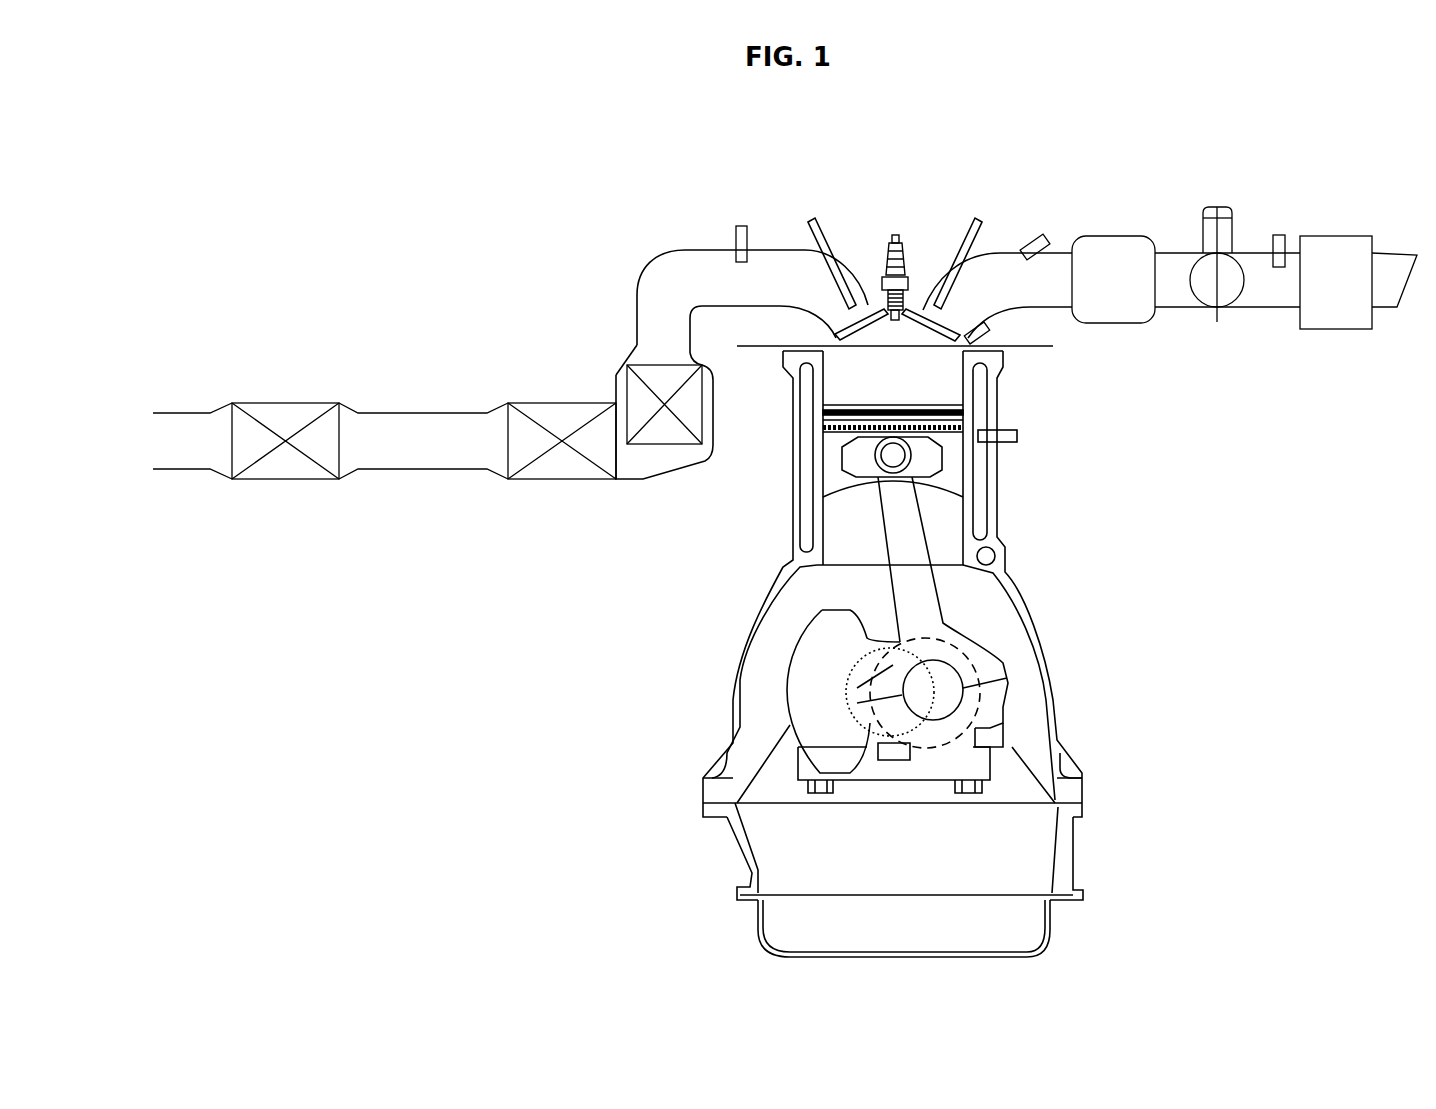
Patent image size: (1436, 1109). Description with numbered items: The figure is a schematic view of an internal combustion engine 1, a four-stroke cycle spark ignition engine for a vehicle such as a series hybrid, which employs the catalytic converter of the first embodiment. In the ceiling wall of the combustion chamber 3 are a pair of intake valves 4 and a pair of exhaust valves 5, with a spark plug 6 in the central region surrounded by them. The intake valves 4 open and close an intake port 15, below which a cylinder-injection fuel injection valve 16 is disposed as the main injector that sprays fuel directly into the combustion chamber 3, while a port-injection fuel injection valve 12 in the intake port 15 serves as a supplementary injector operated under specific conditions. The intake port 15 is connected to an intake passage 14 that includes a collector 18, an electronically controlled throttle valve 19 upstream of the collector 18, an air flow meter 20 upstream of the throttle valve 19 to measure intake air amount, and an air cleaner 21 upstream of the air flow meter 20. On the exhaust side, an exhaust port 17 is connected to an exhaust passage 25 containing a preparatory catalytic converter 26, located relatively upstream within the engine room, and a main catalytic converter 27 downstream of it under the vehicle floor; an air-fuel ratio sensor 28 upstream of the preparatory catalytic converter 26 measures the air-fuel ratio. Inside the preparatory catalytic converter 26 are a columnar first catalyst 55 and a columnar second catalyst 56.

The internal combustion engine 1 is at (1162, 553).
The combustion chamber 3 is at (1000, 379).
The intake valves 4 is at (929, 312).
The exhaust valves 5 is at (858, 305).
The spark plug 6 is at (887, 252).
The port-injection fuel injection valve 12 is at (1035, 243).
The intake passage 14 is at (1265, 300).
The intake port 15 is at (1003, 270).
The cylinder-injection fuel injection valve 16 is at (988, 326).
The exhaust port 17 is at (768, 268).
The collector 18 is at (1115, 247).
The throttle valve 19 is at (1200, 270).
The air flow meter 20 is at (1278, 240).
The air cleaner 21 is at (1338, 257).
The exhaust passage 25 is at (662, 277).
The preparatory catalytic converter 26 is at (636, 492).
The main catalytic converter 27 is at (285, 463).
The air-fuel ratio sensor 28 is at (738, 236).
The first catalyst 55 is at (633, 392).
The second catalyst 56 is at (560, 462).